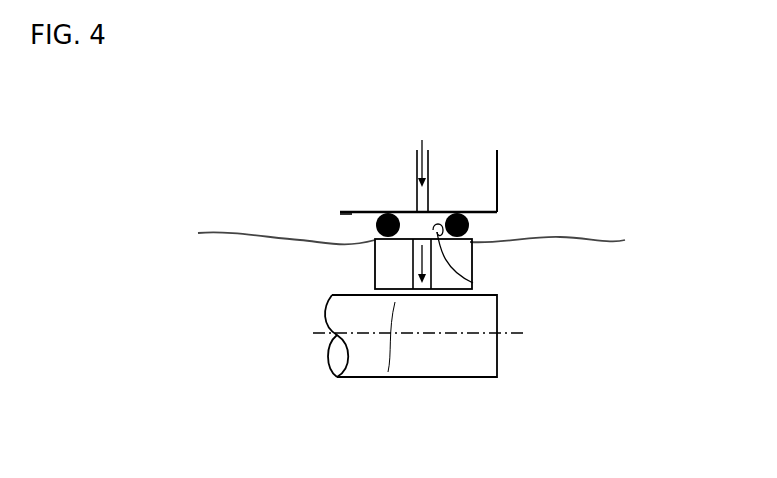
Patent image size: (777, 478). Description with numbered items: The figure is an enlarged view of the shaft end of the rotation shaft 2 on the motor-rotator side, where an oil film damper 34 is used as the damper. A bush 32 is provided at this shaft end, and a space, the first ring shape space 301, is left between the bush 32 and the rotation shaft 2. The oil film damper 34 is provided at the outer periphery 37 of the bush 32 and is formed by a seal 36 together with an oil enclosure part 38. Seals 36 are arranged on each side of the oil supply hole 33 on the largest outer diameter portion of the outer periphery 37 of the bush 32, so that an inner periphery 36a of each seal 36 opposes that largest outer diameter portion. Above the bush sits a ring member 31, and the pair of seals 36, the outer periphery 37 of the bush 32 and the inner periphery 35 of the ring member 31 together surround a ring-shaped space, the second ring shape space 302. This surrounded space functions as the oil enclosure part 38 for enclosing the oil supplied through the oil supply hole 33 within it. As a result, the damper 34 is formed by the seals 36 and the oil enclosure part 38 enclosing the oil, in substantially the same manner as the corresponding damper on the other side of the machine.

The rotation shaft 2 is at (465, 363).
The ring member 31 is at (358, 180).
The bush 32 is at (458, 258).
The oil supply hole 33 is at (410, 282).
The oil film damper 34 is at (403, 200).
The inner periphery of the ring member 35 is at (343, 214).
The seal 36 is at (470, 223).
The inner periphery of the seal 36a is at (400, 235).
The outer periphery of the bush 37 is at (473, 283).
The oil enclosure part 38 is at (437, 222).
The first ring shape space 301 is at (388, 372).
The second ring shape space 302 is at (453, 200).